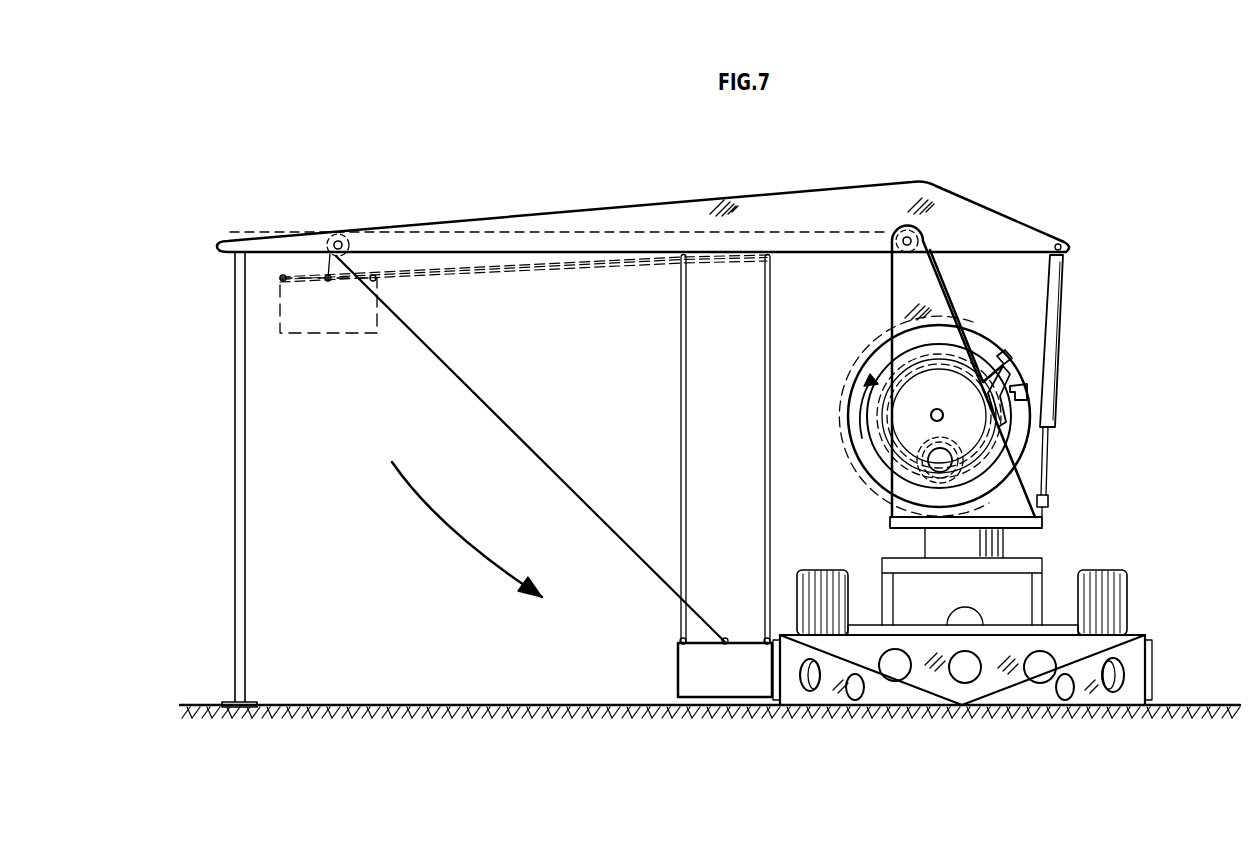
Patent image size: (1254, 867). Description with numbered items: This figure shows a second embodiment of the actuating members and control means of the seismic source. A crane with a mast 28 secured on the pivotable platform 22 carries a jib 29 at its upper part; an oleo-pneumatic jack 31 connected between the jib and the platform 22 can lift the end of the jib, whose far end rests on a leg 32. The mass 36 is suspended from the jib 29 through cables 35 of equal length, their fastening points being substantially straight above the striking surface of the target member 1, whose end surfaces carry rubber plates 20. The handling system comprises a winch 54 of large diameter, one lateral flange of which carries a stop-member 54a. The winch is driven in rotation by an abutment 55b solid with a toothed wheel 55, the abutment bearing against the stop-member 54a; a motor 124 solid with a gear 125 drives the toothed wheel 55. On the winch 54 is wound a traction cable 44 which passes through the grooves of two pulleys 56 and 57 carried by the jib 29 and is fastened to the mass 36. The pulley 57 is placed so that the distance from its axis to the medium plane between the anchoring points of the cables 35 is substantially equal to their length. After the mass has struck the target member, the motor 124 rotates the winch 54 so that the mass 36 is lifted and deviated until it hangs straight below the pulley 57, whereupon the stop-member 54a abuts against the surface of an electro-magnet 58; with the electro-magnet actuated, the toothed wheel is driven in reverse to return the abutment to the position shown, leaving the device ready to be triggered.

The target member 1 is at (1137, 630).
The rubber plates 20 is at (775, 635).
The platform 22 is at (1043, 523).
The mast 28 is at (898, 508).
The jib 29 is at (676, 205).
The oleo-pneumatic jack 31 is at (1060, 332).
The leg 32 is at (245, 524).
The cables 35 is at (680, 450).
The mass 36 is at (676, 668).
The cable 44 is at (473, 402).
The winch 54 is at (853, 387).
The stop-member 54a is at (1015, 397).
The toothed wheel 55 is at (878, 447).
The abutment 55b is at (1008, 388).
The pulley 56 is at (902, 228).
The pulley 57 is at (333, 233).
The electro-magnet 58 is at (1003, 352).
The motor 124 is at (932, 441).
The gear 125 is at (958, 443).